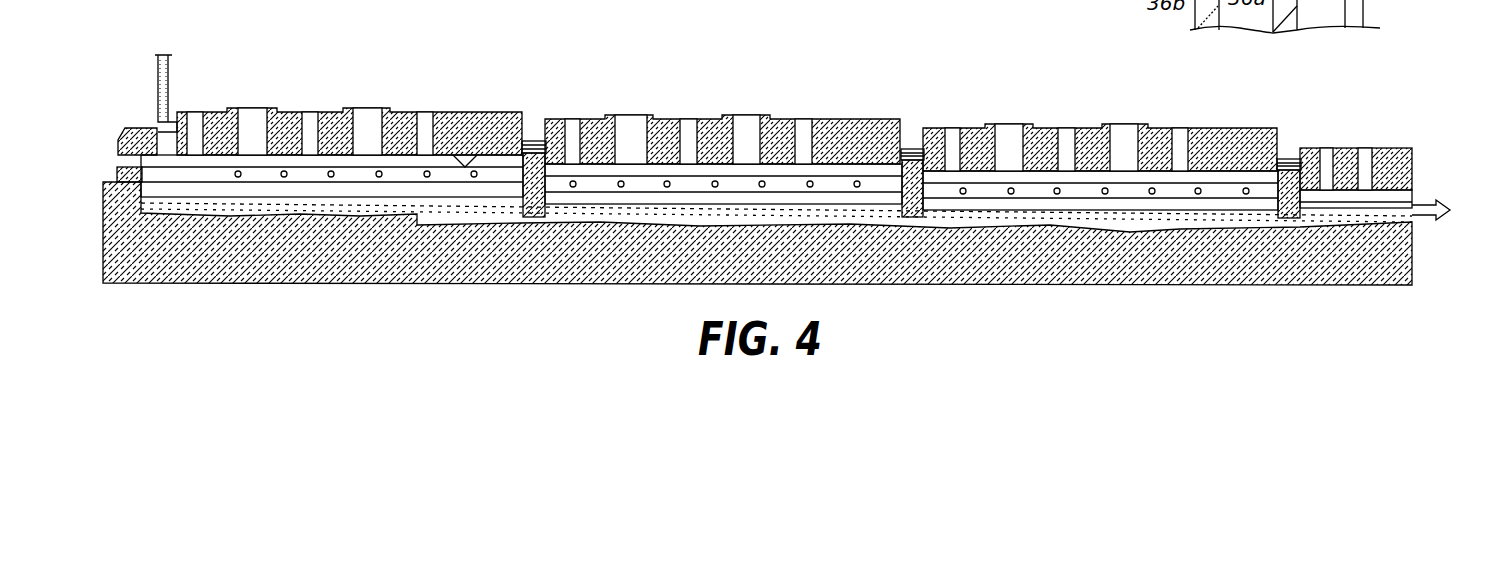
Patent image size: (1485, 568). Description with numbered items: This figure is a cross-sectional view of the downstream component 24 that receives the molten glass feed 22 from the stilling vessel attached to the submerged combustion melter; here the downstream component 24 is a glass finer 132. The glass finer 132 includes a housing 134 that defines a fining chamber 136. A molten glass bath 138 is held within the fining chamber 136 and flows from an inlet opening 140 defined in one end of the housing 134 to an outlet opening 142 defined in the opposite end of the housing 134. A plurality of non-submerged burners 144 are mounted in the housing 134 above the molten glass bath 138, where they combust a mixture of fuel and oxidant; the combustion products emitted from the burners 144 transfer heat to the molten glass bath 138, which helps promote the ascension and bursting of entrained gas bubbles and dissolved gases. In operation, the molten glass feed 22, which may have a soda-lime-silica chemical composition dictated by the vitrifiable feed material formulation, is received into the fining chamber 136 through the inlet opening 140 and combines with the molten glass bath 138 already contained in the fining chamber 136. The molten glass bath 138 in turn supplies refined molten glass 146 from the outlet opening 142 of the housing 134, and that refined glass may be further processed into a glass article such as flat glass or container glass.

The molten glass feed 22 is at (158, 78).
The downstream component 24 is at (760, 111).
The glass finer 132 is at (256, 77).
The housing 134 is at (405, 118).
The fining chamber 136 is at (469, 163).
The molten glass bath 138 is at (950, 216).
The inlet opening 140 is at (158, 127).
The outlet opening 142 is at (1412, 222).
The non-submerged burners 144 is at (331, 171).
The refined molten glass 146 is at (1428, 201).